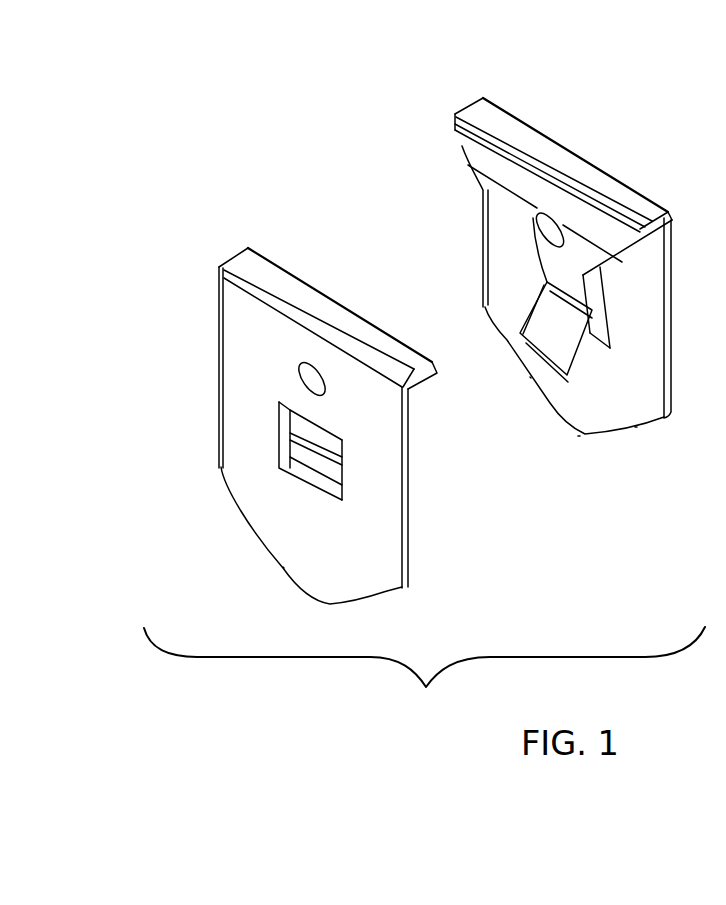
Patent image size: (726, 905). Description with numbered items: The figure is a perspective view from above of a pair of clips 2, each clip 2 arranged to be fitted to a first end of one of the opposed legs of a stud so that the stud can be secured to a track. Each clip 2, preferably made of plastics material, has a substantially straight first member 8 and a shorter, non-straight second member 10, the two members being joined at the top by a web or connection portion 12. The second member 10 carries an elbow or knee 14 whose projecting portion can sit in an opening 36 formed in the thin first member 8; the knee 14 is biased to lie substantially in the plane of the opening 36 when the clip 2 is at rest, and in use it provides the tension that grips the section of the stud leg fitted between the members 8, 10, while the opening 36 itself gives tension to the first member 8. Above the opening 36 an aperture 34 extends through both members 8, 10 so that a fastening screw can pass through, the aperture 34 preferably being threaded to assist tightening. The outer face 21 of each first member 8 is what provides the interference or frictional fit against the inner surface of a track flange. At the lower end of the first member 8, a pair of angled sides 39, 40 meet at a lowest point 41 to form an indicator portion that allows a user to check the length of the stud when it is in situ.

The clip 2 is at (137, 237).
The first member 8 is at (387, 593).
The second member 10 is at (342, 457).
The connection portion 12 is at (228, 262).
The knee 14 is at (288, 440).
The outer face 21 is at (305, 548).
The aperture 34 is at (300, 370).
The opening 36 is at (288, 472).
The angled side 39 is at (532, 377).
The angled side 40 is at (636, 428).
The lowest point 41 is at (578, 437).